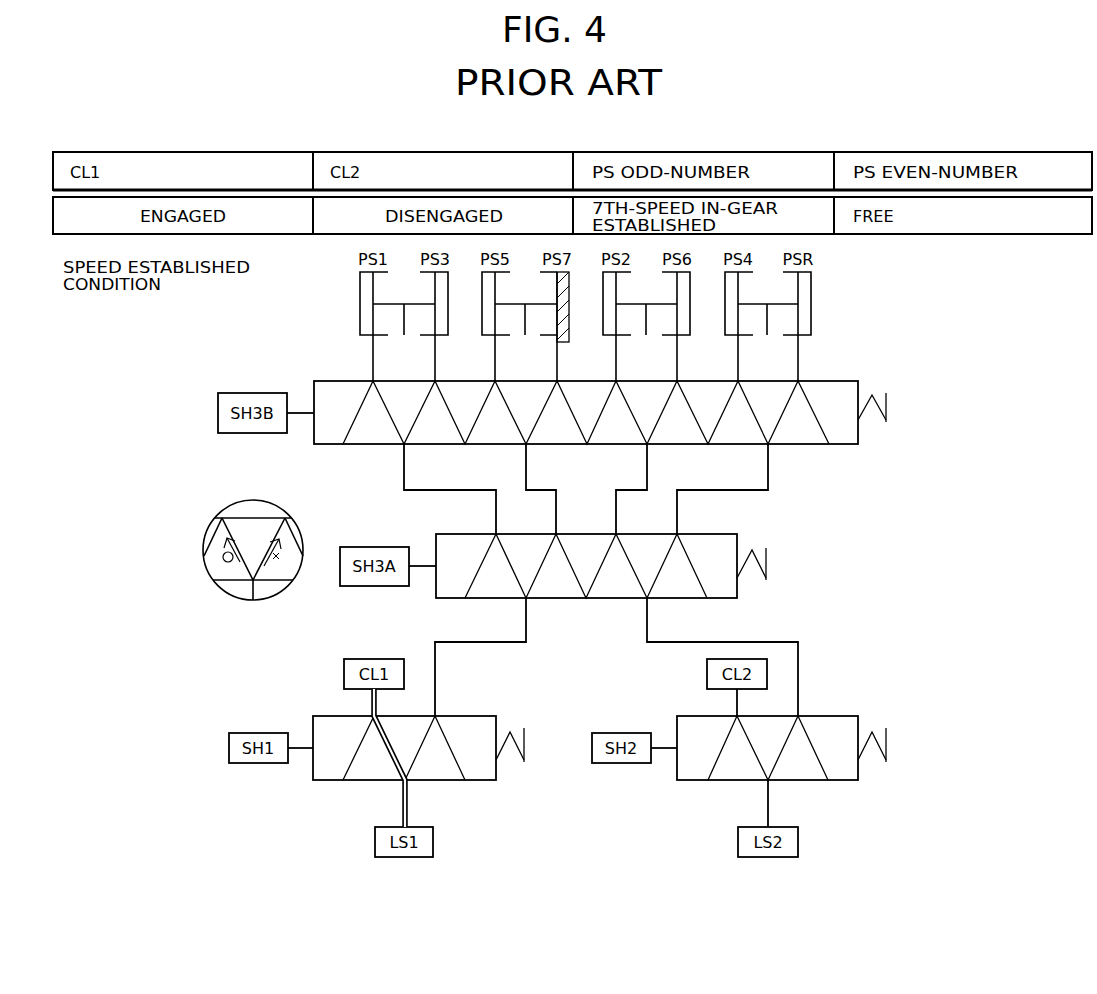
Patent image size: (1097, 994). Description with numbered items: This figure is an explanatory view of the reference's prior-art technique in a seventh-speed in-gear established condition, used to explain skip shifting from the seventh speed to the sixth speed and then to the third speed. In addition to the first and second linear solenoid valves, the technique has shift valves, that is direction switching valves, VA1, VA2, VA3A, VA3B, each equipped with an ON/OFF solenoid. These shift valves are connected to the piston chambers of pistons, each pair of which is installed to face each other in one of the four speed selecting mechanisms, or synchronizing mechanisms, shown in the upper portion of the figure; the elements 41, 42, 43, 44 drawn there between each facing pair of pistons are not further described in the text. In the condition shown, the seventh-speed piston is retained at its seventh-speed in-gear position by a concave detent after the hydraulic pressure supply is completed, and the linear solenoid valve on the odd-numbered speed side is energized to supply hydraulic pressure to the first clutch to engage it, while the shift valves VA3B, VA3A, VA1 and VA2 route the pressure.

The shift fork / piston rod (PS1/PS3) 41 is at (403, 326).
The shift fork / piston rod (PS4/PSR) 42 is at (766, 326).
The shift fork / piston rod (PS5/PS7) 43 is at (524, 326).
The shift fork / piston rod (PS2/PS6) 44 is at (645, 326).
The shift valve VA1 is at (464, 712).
The shift valve VA2 is at (823, 712).
The shift valve VA3A is at (728, 530).
The shift valve VA3B is at (830, 375).